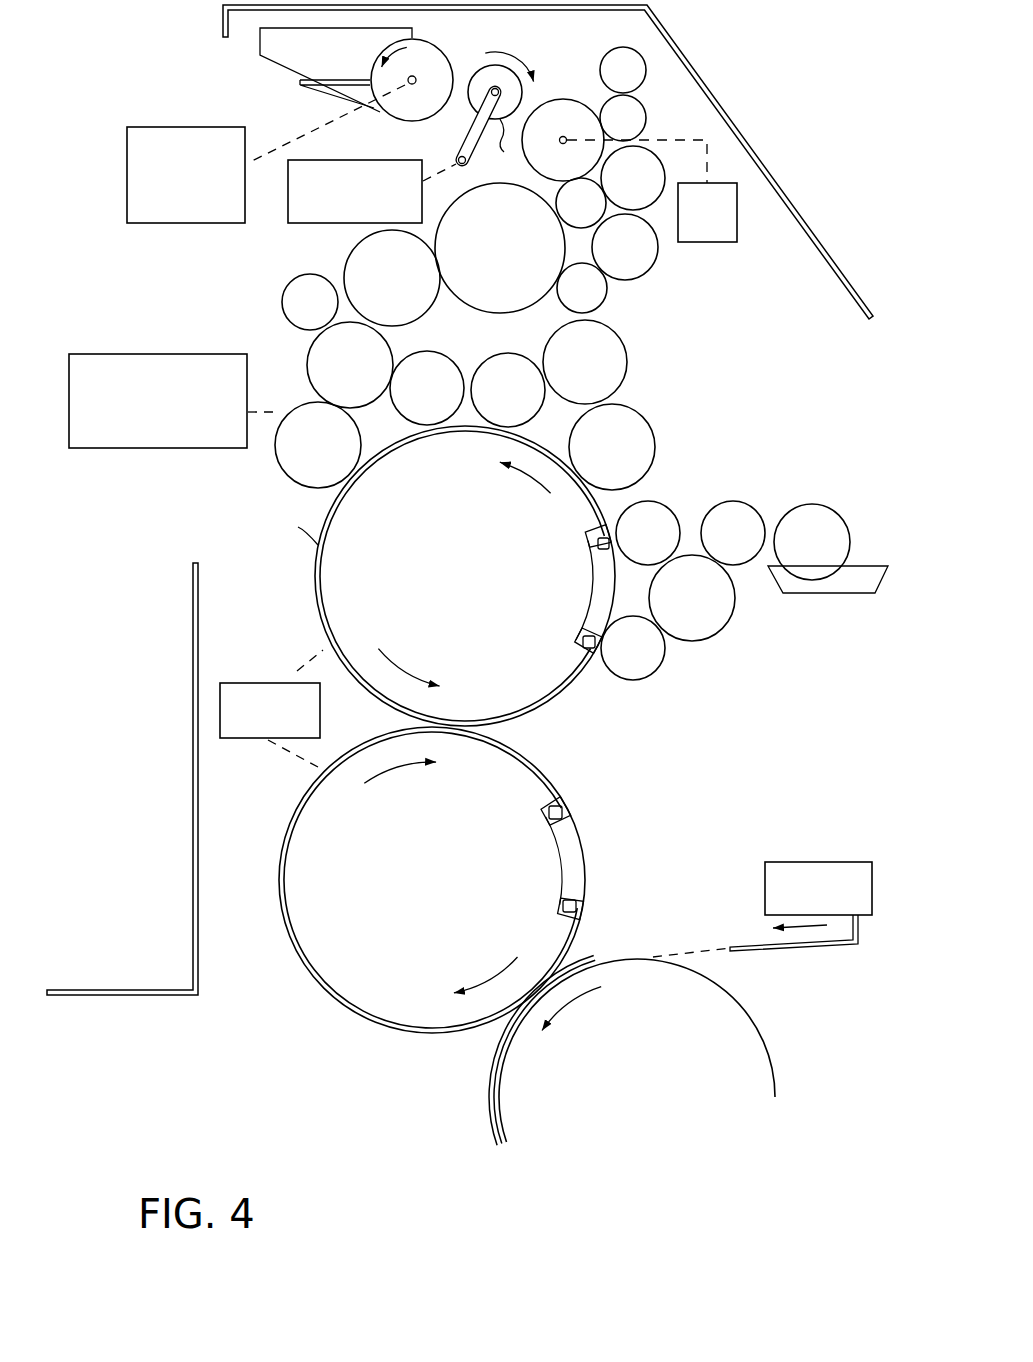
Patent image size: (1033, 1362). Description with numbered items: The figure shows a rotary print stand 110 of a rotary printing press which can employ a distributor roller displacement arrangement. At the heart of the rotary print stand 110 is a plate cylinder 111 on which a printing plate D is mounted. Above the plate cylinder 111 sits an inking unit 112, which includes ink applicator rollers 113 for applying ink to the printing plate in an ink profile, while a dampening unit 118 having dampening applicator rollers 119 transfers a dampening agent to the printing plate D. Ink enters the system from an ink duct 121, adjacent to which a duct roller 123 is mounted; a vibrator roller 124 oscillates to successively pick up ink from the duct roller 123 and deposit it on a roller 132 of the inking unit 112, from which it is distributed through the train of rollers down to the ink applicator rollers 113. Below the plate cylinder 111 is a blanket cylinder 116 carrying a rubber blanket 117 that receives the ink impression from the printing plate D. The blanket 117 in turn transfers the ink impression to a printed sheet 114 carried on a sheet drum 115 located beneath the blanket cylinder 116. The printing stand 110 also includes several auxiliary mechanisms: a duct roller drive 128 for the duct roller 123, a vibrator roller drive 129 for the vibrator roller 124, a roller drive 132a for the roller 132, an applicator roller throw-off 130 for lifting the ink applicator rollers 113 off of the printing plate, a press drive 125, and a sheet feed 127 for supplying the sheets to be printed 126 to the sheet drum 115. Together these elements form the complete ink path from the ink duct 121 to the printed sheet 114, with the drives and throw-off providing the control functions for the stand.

The rotary print stand 110 is at (771, 128).
The plate cylinder 111 is at (338, 594).
The inking unit 112 is at (622, 303).
The ink applicator rollers 113 is at (665, 454).
The printed sheet 114 is at (597, 958).
The sheet drum 115 is at (770, 995).
The blanket cylinder 116 is at (292, 851).
The rubber blanket 117 is at (345, 1010).
The dampening unit 118 is at (735, 635).
The dampening applicator rollers 119 is at (666, 670).
The ink duct 121 is at (336, 70).
The duct roller 123 is at (418, 43).
The vibrator roller 124 is at (478, 118).
The press drive 125 is at (248, 682).
The sheets to be printed 126 is at (829, 948).
The sheet feed 127 is at (823, 862).
The duct roller drive 128 is at (230, 224).
The vibrator roller drive 129 is at (396, 160).
The applicator roller throw-off 130 is at (228, 449).
The roller 132 is at (568, 93).
The roller drive 132a is at (710, 243).